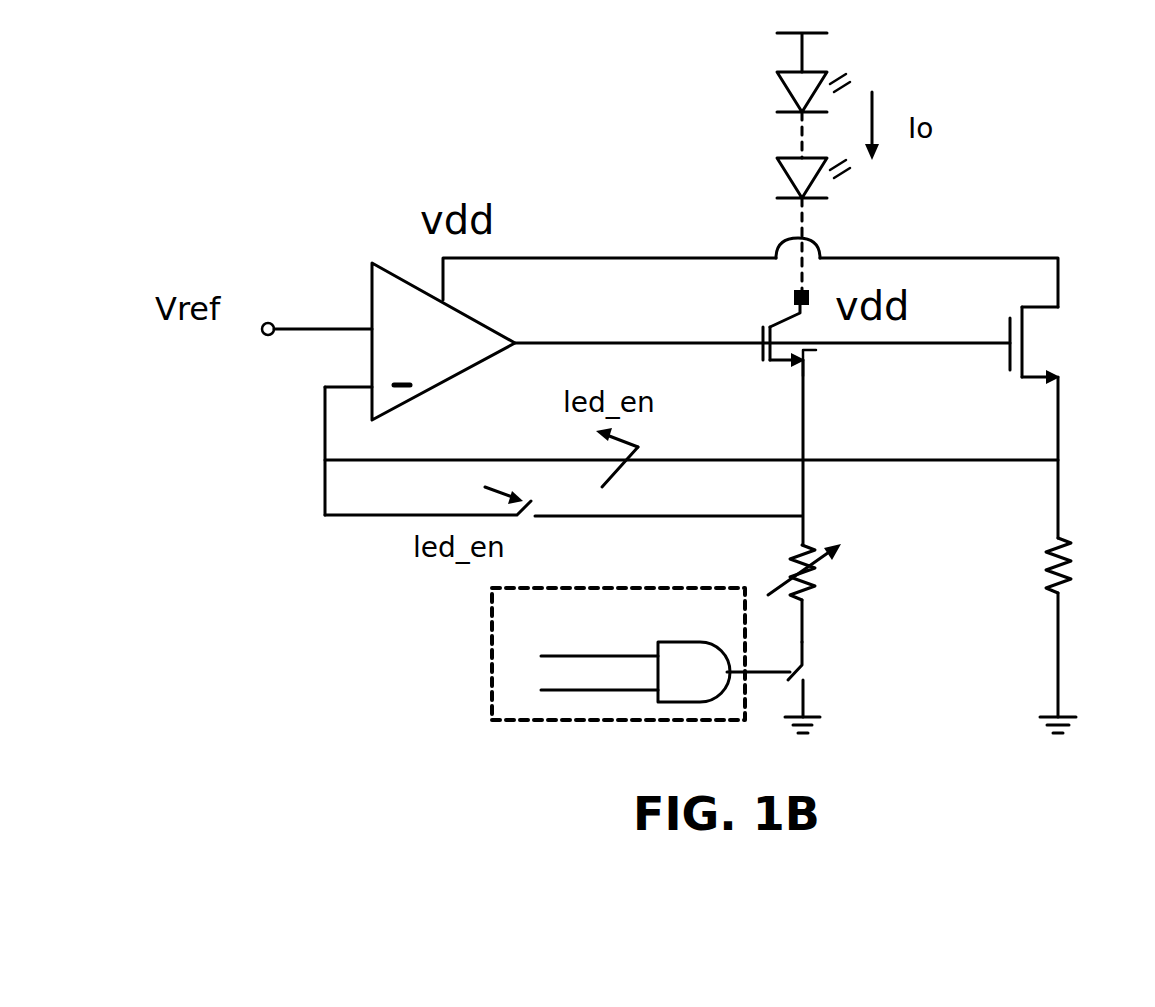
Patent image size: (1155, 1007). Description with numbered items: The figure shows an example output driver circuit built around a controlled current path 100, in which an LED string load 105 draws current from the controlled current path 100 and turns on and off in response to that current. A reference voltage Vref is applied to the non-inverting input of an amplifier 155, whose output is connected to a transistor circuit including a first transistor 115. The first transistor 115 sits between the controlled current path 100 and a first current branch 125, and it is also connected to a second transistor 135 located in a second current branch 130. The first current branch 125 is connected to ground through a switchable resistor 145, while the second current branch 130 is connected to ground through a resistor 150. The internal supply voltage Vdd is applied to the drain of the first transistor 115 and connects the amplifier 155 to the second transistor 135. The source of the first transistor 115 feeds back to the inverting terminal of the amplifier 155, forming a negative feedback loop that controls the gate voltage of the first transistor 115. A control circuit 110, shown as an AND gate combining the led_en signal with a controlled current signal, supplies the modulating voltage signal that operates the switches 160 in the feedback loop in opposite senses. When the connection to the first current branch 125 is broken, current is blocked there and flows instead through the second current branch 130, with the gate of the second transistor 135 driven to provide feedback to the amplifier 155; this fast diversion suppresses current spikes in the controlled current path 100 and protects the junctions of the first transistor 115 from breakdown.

The controlled current path 100 is at (804, 217).
The LED string load 105 is at (773, 73).
The control circuit 110 is at (490, 683).
The first transistor 115 is at (770, 360).
The first current branch 125 is at (803, 490).
The second current branch 130 is at (1058, 490).
The second transistor 135 is at (1020, 376).
The switchable resistor 145 is at (815, 590).
The resistor 150 is at (1050, 590).
The amplifier 155 is at (368, 278).
The switches 160 is at (535, 503).